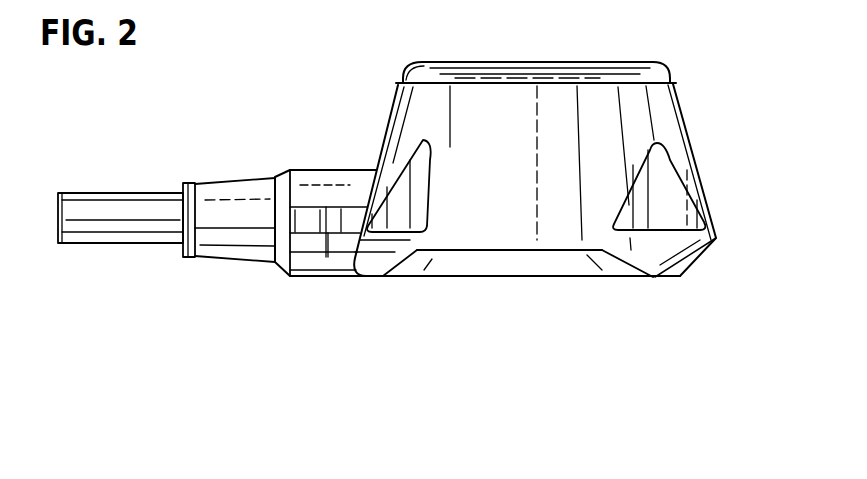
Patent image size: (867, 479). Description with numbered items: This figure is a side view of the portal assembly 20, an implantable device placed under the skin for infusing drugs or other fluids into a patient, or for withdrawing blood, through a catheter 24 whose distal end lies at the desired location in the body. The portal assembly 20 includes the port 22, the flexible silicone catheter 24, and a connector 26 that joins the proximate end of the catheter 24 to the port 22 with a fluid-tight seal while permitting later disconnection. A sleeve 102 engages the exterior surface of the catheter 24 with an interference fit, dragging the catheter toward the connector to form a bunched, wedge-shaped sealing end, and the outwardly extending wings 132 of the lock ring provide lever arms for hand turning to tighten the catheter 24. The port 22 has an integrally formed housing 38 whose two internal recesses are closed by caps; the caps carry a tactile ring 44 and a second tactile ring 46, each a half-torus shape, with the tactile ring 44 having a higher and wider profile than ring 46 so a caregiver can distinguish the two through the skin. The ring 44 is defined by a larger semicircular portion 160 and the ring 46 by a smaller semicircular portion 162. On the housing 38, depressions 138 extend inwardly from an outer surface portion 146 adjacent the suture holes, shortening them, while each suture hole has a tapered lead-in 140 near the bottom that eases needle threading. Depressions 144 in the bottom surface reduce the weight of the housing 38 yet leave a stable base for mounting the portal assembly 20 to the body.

The portal assembly 20 is at (414, 176).
The port 22 is at (562, 176).
The catheter 24 is at (120, 245).
The connector 26 is at (477, 251).
The housing 38 is at (707, 283).
The tactile ring 44 is at (519, 44).
The second tactile ring 46 is at (540, 42).
The sleeve 102 is at (224, 194).
The wings 132 is at (349, 268).
The depressions 138 is at (690, 186).
The lead-in 140 is at (478, 291).
The depressions 144 is at (622, 298).
The outer surface portion 146 is at (551, 129).
The semicircular portion 160 is at (393, 48).
The semicircular portion 162 is at (535, 48).